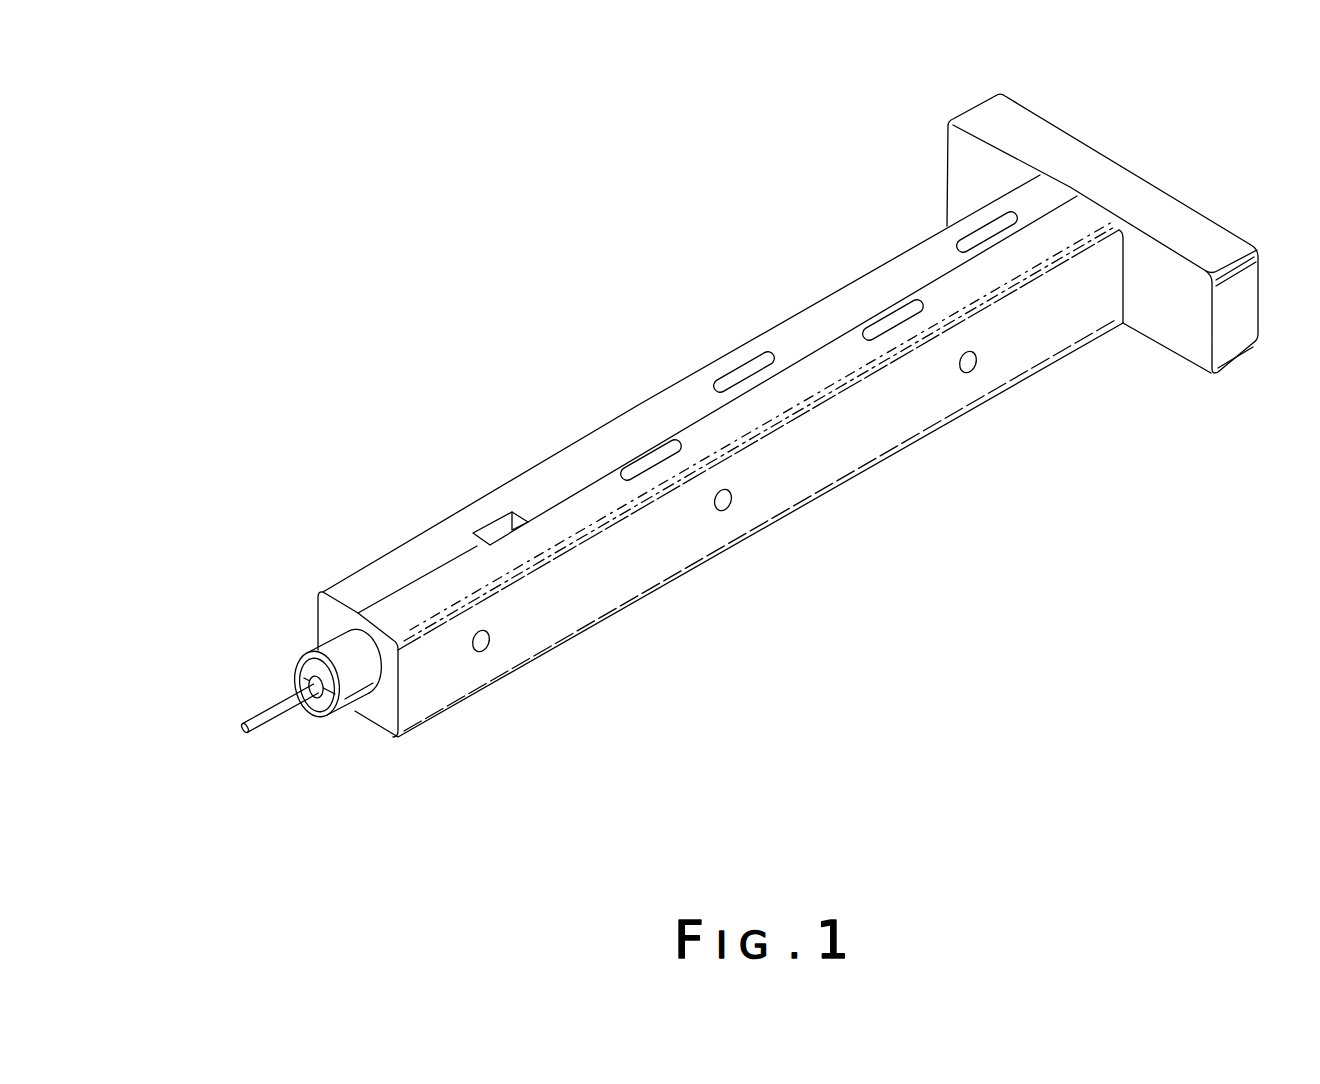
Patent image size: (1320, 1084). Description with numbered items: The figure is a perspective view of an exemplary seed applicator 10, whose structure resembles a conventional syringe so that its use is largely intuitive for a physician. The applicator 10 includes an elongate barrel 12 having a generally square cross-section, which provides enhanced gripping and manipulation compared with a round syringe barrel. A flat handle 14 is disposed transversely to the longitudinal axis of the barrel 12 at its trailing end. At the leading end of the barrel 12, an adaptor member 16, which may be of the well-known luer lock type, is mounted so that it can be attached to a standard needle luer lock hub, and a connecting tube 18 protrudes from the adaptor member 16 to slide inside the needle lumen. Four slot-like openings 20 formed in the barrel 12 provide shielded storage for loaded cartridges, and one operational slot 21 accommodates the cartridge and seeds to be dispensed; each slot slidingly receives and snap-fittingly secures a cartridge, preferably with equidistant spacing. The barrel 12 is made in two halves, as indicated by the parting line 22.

The seed applicator 10 is at (617, 221).
The elongate barrel 12 is at (613, 418).
The flat handle 14 is at (1163, 184).
The adaptor member 16 is at (319, 651).
The connecting tube 18 is at (271, 720).
The slot-like openings 20 is at (985, 216).
The operational slot 21 is at (498, 517).
The parting line 22 is at (403, 582).